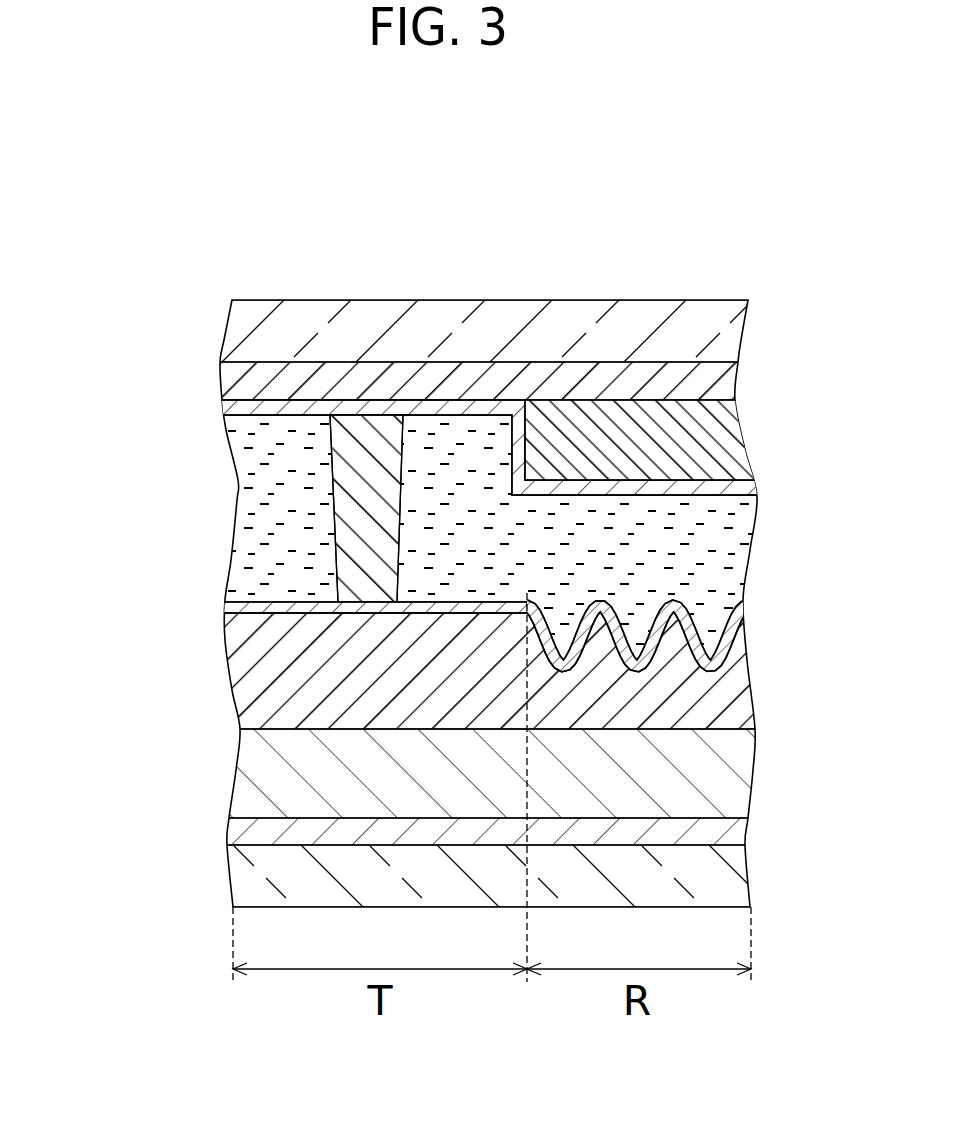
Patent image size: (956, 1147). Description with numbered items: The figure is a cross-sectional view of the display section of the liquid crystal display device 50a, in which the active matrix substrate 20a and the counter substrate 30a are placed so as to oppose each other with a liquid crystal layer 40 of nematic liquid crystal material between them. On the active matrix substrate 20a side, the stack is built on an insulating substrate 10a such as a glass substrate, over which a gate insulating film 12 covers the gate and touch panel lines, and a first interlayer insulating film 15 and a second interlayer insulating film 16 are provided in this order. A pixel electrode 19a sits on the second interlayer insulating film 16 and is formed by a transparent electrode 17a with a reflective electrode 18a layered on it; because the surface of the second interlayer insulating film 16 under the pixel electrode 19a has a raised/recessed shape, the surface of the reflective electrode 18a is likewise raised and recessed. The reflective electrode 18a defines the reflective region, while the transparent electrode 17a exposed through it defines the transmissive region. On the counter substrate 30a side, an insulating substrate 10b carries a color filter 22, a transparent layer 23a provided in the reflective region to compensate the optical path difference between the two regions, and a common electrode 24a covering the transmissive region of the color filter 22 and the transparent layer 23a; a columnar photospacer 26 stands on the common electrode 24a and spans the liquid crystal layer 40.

The liquid crystal display device 50a is at (262, 222).
The insulating substrate 10a is at (236, 882).
The insulating substrate 10b is at (232, 330).
The gate insulating film 12 is at (236, 832).
The first interlayer insulating film 15 is at (243, 764).
The second interlayer insulating film 16 is at (240, 672).
The transparent electrode 17a is at (232, 607).
The reflective electrode 18a is at (528, 596).
The pixel electrode 19a is at (96, 525).
The color filter 22 is at (222, 378).
The transparent layer 23a is at (644, 420).
The common electrode 24a is at (230, 411).
The photospacer 26 is at (332, 490).
The liquid crystal layer 40 is at (770, 495).
The counter substrate 30a is at (770, 300).
The active matrix substrate 20a is at (770, 602).